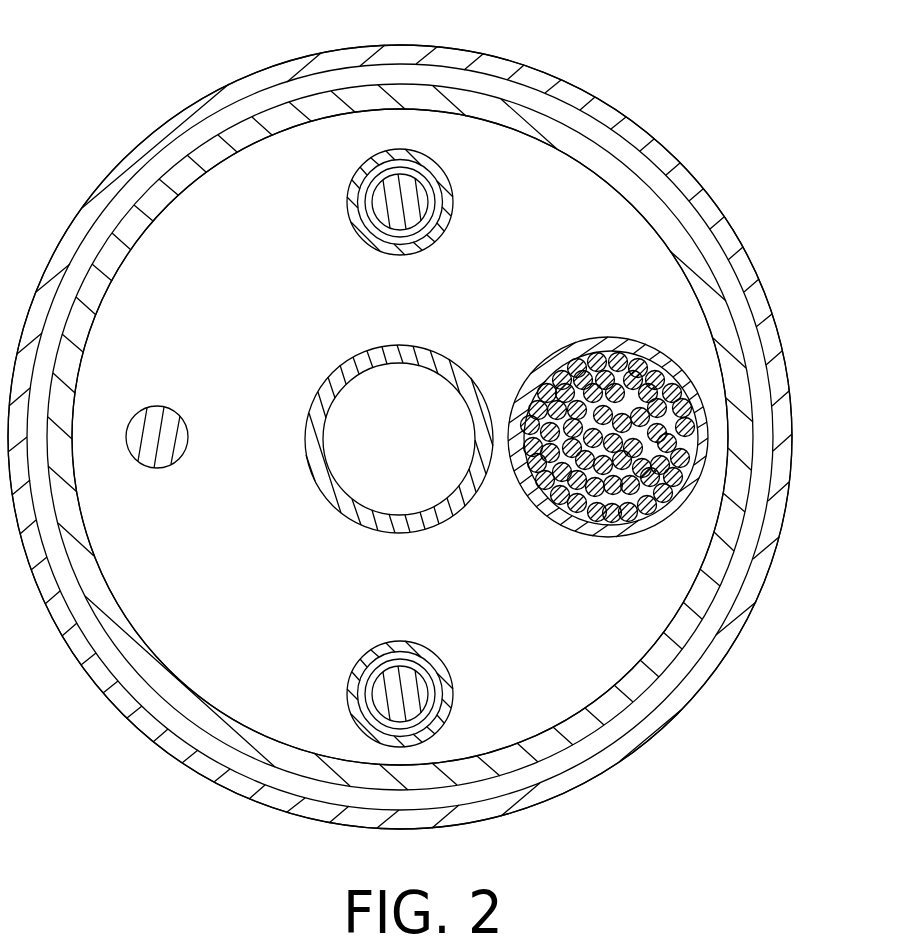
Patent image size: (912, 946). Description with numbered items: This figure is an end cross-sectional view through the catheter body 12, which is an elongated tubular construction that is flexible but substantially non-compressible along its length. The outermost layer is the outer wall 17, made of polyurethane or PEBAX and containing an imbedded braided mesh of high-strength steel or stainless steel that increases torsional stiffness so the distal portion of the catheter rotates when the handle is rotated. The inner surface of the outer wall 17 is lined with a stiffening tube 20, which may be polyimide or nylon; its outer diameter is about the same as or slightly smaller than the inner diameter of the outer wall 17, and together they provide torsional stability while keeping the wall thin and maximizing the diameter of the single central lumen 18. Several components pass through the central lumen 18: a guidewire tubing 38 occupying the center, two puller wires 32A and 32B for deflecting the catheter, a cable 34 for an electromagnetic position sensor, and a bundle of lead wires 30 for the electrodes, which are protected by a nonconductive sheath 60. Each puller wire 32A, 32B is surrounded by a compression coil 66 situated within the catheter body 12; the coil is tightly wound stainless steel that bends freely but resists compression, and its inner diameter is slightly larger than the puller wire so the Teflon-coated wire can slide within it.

The catheter body 12 is at (678, 828).
The outer wall 17 is at (693, 180).
The central lumen 18 is at (247, 564).
The stiffening tube 20 is at (572, 142).
The lead wires 30 is at (650, 455).
The puller wire 32A is at (402, 218).
The puller wire 32B is at (378, 690).
The cable 34 is at (172, 408).
The guidewire tubing 38 is at (338, 507).
The nonconductive sheath 60 is at (615, 343).
The compression coil 66 is at (348, 212).